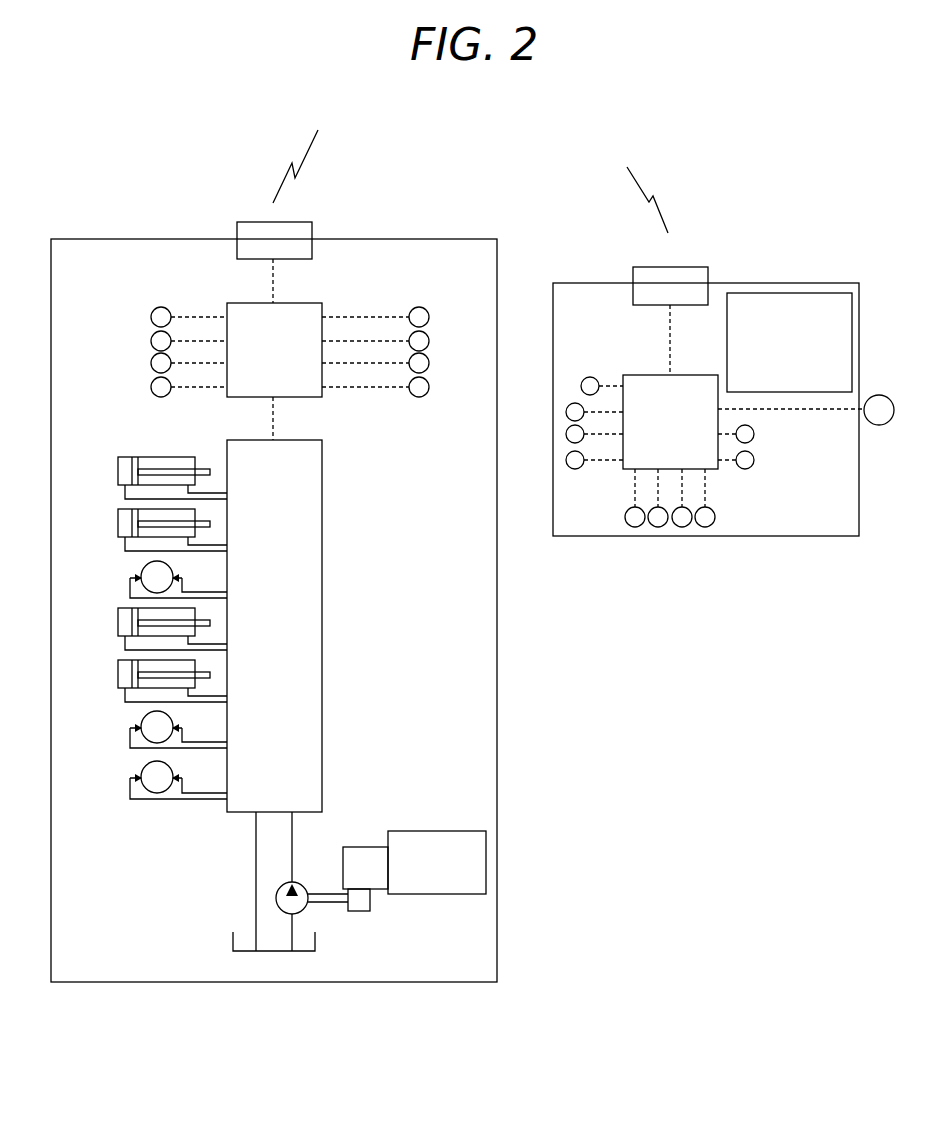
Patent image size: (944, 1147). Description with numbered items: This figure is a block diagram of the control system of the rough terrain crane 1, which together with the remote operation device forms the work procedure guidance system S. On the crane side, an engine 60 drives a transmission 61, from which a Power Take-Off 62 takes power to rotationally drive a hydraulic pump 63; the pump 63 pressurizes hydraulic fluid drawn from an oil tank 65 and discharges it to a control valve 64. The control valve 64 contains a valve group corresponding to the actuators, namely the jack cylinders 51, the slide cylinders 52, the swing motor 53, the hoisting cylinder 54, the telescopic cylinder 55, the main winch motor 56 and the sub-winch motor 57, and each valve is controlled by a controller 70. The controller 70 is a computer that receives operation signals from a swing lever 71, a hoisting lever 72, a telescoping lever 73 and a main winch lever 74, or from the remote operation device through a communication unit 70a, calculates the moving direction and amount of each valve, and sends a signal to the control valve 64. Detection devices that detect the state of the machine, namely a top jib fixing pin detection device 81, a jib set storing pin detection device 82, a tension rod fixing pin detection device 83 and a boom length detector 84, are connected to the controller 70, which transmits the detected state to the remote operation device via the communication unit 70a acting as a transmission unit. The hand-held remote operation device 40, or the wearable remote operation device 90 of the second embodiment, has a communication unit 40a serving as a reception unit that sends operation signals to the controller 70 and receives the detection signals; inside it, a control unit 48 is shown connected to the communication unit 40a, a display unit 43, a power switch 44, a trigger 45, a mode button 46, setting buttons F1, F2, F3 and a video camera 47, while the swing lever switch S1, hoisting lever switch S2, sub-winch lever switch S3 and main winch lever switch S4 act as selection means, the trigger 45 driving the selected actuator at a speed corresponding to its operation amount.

The work procedure guidance system S is at (128, 198).
The rough terrain crane 1 is at (447, 239).
The communication unit 70a is at (312, 229).
The controller 70 is at (227, 303).
The swing lever 71 is at (151, 317).
The hoisting lever 72 is at (151, 341).
The telescoping lever 73 is at (151, 363).
The main winch lever 74 is at (151, 387).
The top jib fixing pin detection device 81 is at (429, 316).
The jib set storing pin detection device 82 is at (429, 340).
The tension rod fixing pin detection device 83 is at (429, 362).
The boom length detector 84 is at (429, 386).
The control valve 64 is at (324, 481).
The jack cylinder 51 is at (118, 466).
The slide cylinder 52 is at (118, 518).
The swing motor 53 is at (143, 567).
The hoisting cylinder 54 is at (118, 618).
The telescopic cylinder 55 is at (118, 670).
The main winch motor 56 is at (143, 717).
The sub-winch motor 57 is at (143, 767).
The engine 60 is at (432, 831).
The transmission 61 is at (356, 847).
The Power Take-Off (PTO) 62 is at (362, 912).
The hydraulic pump 63 is at (301, 886).
The oil tank 65 is at (228, 942).
The remote operation device 40 is at (613, 283).
The remote operation device 90 is at (697, 367).
The communication unit 40a is at (708, 276).
The control unit of remote controller 48 is at (655, 375).
The display unit 43 is at (793, 293).
The video camera 47 is at (879, 395).
The mode button 46 is at (581, 382).
The setting button F1 is at (567, 408).
The setting button F2 is at (567, 430).
The setting button F3 is at (567, 455).
The power switch 44 is at (754, 434).
The trigger 45 is at (754, 460).
The swing lever switch S1 is at (635, 527).
The hoisting lever switch S2 is at (658, 527).
The sub-winch lever switch S3 is at (682, 527).
The main winch lever switch S4 is at (705, 527).